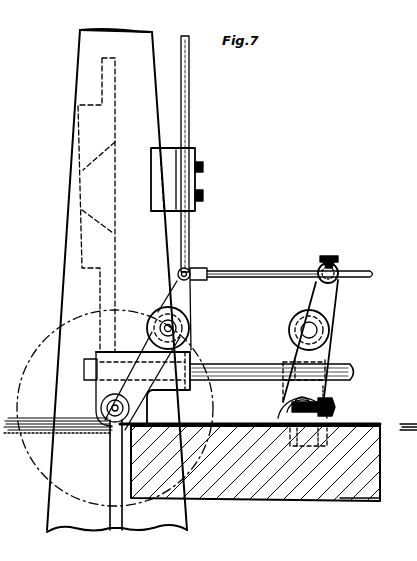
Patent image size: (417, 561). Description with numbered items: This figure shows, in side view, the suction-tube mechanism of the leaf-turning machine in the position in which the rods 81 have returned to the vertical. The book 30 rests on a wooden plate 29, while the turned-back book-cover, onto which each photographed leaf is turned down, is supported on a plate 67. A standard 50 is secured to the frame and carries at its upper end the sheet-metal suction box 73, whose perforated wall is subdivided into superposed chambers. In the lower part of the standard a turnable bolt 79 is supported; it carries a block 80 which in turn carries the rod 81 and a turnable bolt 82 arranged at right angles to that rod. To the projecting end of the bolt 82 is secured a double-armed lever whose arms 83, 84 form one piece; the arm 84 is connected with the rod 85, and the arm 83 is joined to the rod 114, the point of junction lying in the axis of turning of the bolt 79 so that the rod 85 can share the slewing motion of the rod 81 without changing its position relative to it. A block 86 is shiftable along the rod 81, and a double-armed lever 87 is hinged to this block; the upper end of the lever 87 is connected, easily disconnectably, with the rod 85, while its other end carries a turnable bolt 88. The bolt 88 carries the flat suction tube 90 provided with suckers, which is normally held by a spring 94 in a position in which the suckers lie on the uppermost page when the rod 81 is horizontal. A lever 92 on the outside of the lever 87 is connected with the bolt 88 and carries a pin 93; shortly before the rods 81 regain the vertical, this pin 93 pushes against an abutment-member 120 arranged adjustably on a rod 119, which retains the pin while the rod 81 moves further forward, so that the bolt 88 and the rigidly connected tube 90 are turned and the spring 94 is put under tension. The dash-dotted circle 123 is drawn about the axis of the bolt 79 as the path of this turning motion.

The standards 50 is at (99, 196).
The sheet-metal box 73 is at (112, 107).
The rod 119 is at (190, 97).
The abutment-member 120 is at (172, 163).
The arm of double-armed lever 84 is at (177, 290).
The rod 85 is at (290, 258).
The turnable bolt 82 is at (182, 330).
The block 80 is at (152, 325).
The arm of double-armed lever 83 is at (137, 389).
The turnable bolt 79 is at (78, 408).
The rod 114 is at (109, 486).
The chain-wheel 123 is at (53, 338).
The plate 67 is at (73, 438).
The book 30 is at (232, 424).
The double-armed lever 87 is at (291, 362).
The block 86 is at (332, 362).
The rod 81 is at (352, 370).
The turnable bolt 88 is at (290, 408).
The flat tube 90 is at (337, 410).
The spring 94 is at (333, 405).
The lever 92 is at (290, 442).
The pin 93 is at (298, 447).
The wooden plate 29 is at (360, 490).